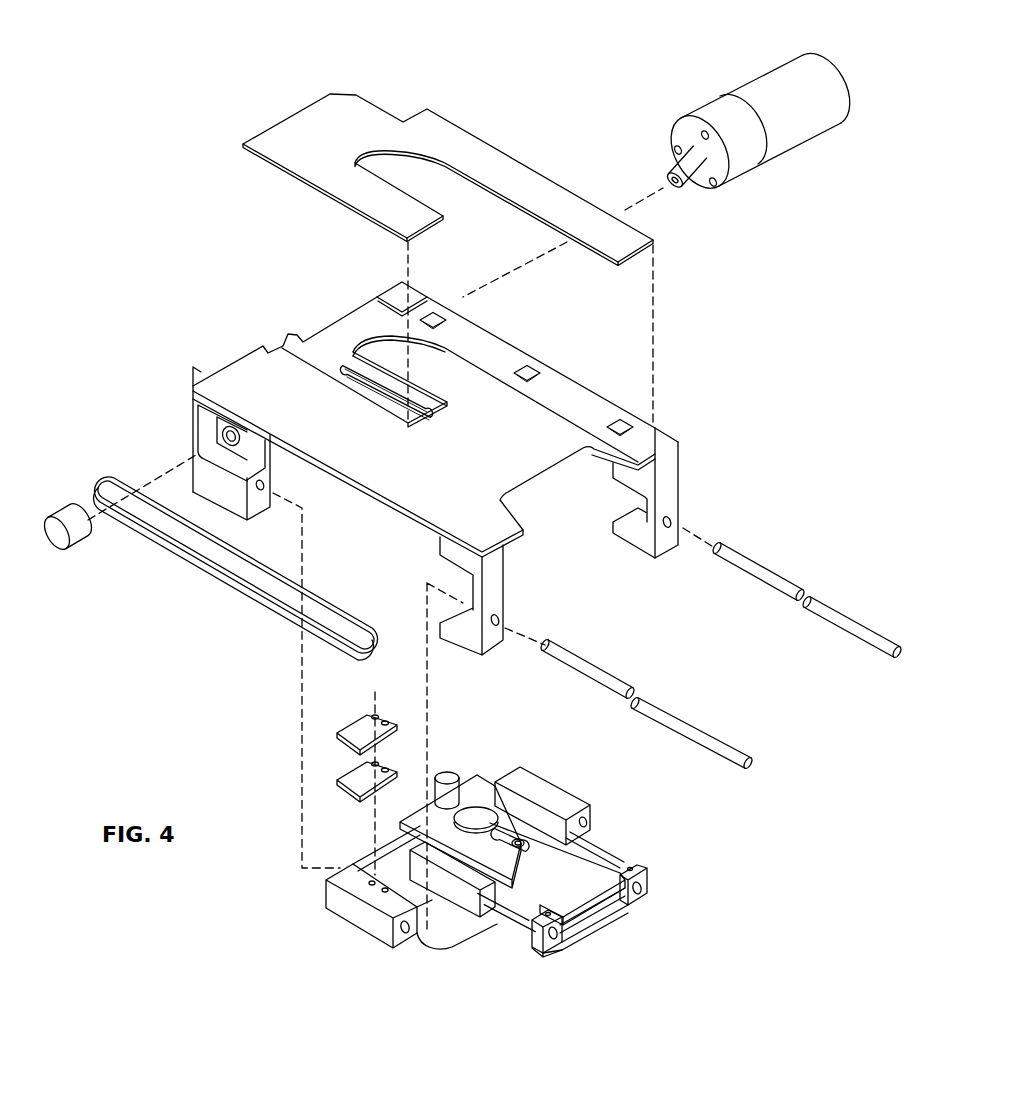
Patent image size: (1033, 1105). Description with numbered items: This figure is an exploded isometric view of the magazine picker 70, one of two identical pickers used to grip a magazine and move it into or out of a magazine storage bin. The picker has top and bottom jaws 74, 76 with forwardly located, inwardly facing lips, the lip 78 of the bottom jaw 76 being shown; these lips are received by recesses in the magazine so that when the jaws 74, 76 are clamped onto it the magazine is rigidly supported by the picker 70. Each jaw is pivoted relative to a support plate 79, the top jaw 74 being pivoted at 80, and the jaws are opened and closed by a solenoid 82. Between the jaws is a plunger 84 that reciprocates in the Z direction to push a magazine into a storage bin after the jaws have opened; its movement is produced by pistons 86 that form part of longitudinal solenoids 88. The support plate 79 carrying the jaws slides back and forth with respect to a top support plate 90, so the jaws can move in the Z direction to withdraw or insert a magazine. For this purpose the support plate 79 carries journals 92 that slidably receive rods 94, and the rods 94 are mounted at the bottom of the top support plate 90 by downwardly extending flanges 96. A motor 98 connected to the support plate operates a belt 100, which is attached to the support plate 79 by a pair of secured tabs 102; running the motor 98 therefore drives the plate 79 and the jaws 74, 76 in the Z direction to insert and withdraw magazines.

The magazine picker 70 is at (540, 79).
The top jaw 74 is at (587, 887).
The bottom jaw 76 is at (558, 947).
The lip 78 is at (598, 933).
The support plate 79 is at (447, 943).
The pivot 80 is at (580, 850).
The solenoid 82 is at (518, 843).
The plunger 84 is at (643, 898).
The pistons 86 is at (612, 863).
The longitudinal solenoids 88 is at (545, 818).
The top support plate 90 is at (245, 363).
The journals 92 is at (563, 797).
The rods 94 is at (860, 623).
The downwardly extending flanges 96 is at (193, 433).
The motor 98 is at (818, 128).
The belt 100 is at (163, 550).
The secured tabs 102 is at (350, 728).